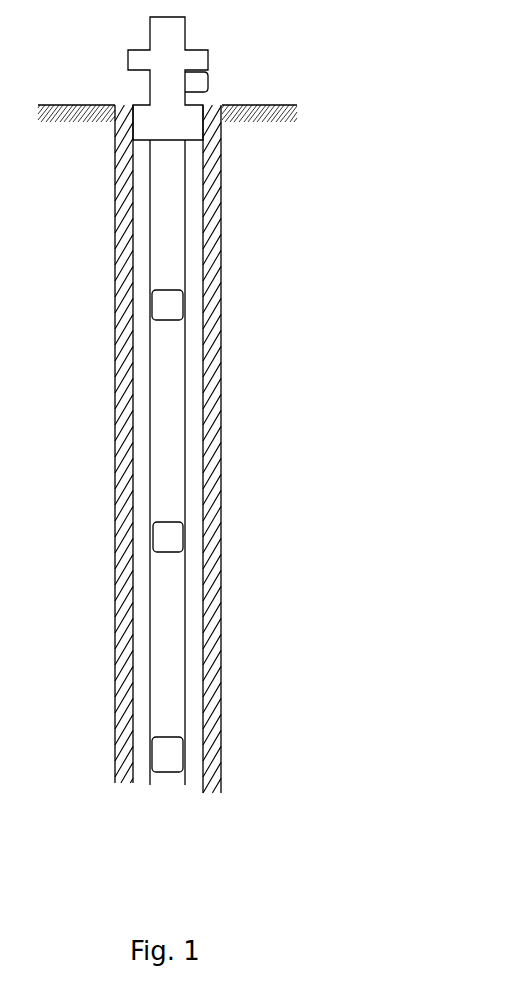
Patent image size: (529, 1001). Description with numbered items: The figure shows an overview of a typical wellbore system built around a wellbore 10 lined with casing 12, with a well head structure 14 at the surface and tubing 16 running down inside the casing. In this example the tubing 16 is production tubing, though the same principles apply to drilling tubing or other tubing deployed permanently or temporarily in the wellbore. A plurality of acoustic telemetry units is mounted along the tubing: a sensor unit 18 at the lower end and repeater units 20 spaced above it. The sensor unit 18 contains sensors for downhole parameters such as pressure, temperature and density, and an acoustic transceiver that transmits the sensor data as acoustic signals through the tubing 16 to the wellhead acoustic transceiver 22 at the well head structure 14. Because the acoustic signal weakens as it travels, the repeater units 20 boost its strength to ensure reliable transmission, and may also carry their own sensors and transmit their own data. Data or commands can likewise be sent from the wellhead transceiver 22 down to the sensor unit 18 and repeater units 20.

The wellbore 10 is at (379, 158).
The casing 12 is at (222, 415).
The well head structure 14 is at (128, 60).
The tubing 16 is at (148, 425).
The sensor unit 18 is at (152, 752).
The repeater units 20 is at (152, 302).
The wellhead acoustic transceiver 22 is at (207, 83).